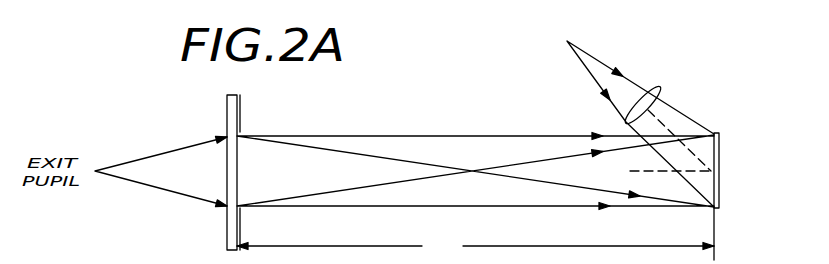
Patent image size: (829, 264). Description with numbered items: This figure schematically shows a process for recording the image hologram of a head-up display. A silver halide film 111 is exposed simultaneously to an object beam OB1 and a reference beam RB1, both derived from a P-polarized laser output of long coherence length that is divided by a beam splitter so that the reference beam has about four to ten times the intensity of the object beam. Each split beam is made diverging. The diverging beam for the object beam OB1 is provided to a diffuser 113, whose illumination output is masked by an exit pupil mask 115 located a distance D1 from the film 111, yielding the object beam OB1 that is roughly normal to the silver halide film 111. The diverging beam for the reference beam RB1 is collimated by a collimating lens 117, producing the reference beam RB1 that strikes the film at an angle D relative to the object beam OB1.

The silver halide film 111 is at (720, 181).
The diffuser 113 is at (227, 240).
The exit pupil mask 115 is at (241, 242).
The collimating lens 117 is at (656, 87).
The object beam OB1 is at (446, 136).
The reference beam RB1 is at (678, 102).
The angle D is at (703, 164).
The distance D1 is at (475, 234).